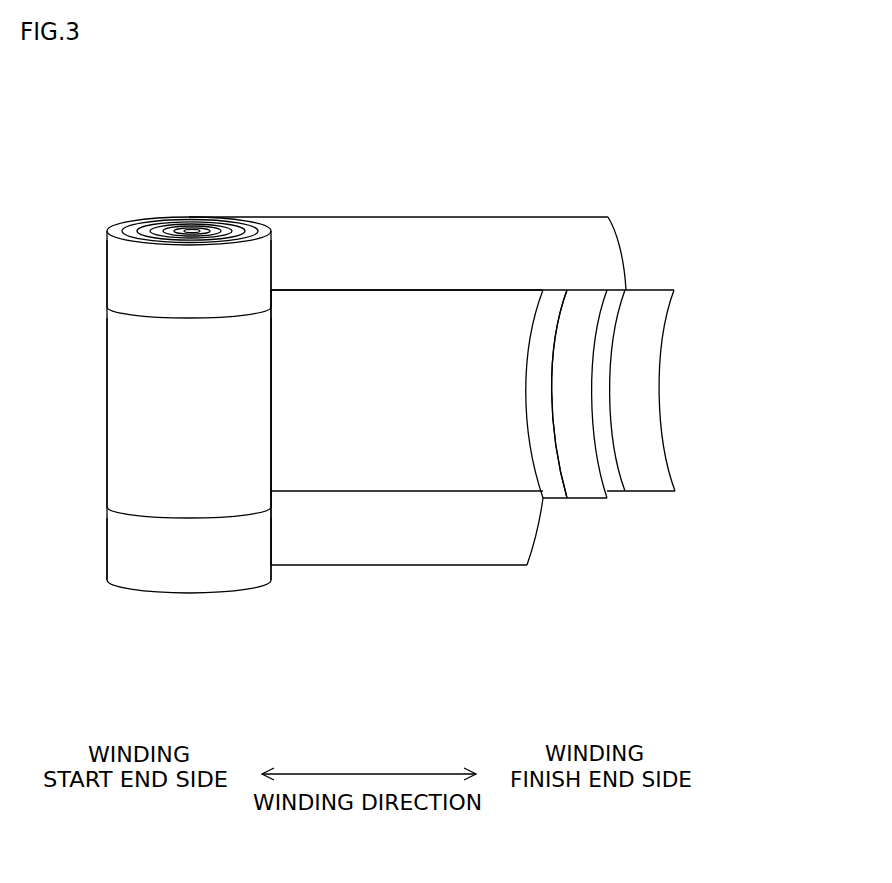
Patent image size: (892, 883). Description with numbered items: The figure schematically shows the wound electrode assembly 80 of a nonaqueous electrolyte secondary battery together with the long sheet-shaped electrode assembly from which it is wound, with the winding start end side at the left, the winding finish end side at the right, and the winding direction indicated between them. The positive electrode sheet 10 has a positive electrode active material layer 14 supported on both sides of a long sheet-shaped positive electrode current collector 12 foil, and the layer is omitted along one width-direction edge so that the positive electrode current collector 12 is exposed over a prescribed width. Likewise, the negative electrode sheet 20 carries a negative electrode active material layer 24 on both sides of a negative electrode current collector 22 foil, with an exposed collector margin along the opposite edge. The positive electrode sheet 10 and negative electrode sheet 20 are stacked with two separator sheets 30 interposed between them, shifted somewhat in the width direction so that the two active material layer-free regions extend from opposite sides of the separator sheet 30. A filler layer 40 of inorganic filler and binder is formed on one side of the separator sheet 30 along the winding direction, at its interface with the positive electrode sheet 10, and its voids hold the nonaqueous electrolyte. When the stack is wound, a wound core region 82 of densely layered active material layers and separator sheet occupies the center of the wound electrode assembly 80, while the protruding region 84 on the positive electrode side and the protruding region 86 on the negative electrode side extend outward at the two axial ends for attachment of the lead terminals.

The positive electrode sheet 10 is at (407, 470).
The positive electrode current collector 12 is at (402, 555).
The positive electrode active material layer 14 is at (493, 472).
The negative electrode sheet 20 is at (432, 312).
The negative electrode current collector 22 is at (487, 228).
The negative electrode active material layer 24 is at (628, 282).
The separator sheet 30 is at (579, 288).
The filler layer 40 is at (553, 483).
The wound electrode assembly 80 is at (150, 364).
The wound core region 82 is at (125, 404).
The protruding region on the positive electrode side 84 is at (125, 550).
The protruding region on the negative electrode side 86 is at (125, 290).